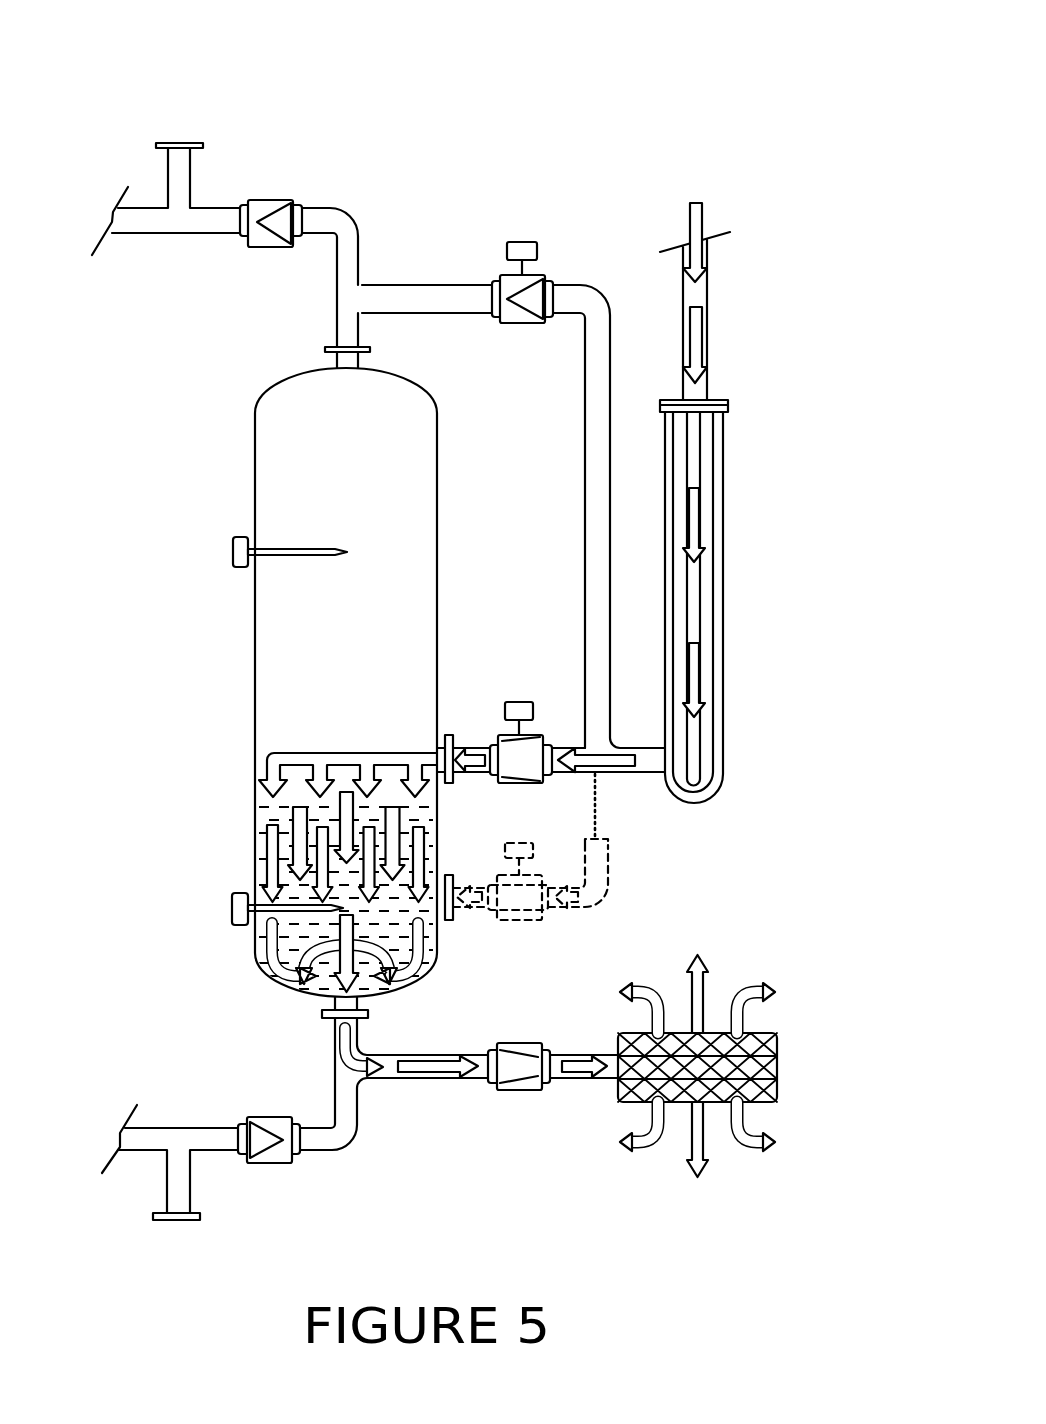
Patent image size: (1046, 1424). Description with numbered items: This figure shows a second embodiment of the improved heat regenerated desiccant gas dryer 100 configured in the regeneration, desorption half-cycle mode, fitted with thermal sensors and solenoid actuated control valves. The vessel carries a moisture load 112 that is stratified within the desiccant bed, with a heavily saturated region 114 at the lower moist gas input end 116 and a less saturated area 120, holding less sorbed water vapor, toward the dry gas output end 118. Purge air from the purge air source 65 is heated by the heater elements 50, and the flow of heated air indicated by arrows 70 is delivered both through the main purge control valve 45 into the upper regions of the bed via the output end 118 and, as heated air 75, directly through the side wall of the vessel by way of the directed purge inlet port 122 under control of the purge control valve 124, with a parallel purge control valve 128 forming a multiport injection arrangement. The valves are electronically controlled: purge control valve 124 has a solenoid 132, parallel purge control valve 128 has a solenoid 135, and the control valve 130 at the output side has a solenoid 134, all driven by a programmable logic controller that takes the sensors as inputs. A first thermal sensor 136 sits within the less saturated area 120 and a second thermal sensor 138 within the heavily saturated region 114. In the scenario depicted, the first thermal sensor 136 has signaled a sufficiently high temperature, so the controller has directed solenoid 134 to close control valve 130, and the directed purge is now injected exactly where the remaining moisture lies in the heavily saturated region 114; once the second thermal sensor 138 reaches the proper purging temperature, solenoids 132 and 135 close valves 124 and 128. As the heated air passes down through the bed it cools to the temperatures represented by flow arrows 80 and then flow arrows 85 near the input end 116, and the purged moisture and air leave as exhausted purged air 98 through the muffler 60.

The heat regenerated desiccant gas dryer 100 is at (397, 105).
The moisture load 112 is at (283, 815).
The heavily saturated region 114 is at (327, 817).
The moist gas input end 116 is at (297, 990).
The dry gas output end 118 is at (296, 383).
The less saturated area 120 is at (388, 500).
The directed purge inlet port 122 is at (449, 735).
The purge control valve 124 is at (520, 783).
The parallel purge control valve 128 is at (523, 920).
The control valve 130 is at (522, 323).
The solenoid 132 is at (533, 710).
The solenoid 134 is at (537, 250).
The solenoid 135 is at (558, 836).
The first thermal sensor 136 is at (232, 553).
The second thermal sensor 138 is at (232, 913).
The heated air 75 is at (402, 752).
The flow arrows 80 is at (300, 853).
The flow arrows 85 is at (433, 965).
The main purge control valve 45 is at (520, 1090).
The heater elements 50 is at (712, 613).
The muffler 60 is at (777, 1065).
The purge air source 65 is at (700, 220).
The arrows 70 is at (693, 528).
The exhausted purged air 98 is at (742, 988).